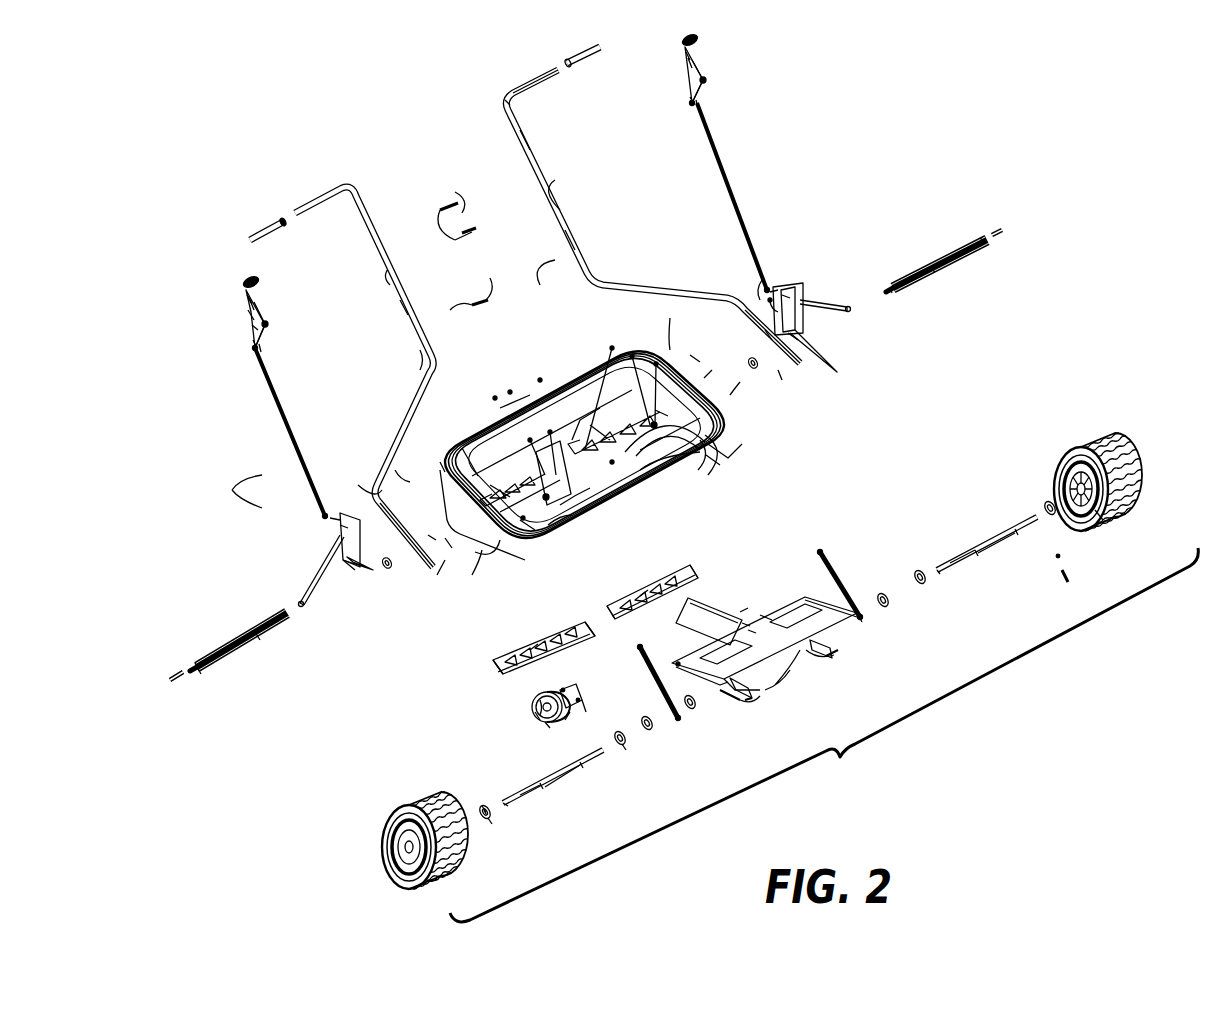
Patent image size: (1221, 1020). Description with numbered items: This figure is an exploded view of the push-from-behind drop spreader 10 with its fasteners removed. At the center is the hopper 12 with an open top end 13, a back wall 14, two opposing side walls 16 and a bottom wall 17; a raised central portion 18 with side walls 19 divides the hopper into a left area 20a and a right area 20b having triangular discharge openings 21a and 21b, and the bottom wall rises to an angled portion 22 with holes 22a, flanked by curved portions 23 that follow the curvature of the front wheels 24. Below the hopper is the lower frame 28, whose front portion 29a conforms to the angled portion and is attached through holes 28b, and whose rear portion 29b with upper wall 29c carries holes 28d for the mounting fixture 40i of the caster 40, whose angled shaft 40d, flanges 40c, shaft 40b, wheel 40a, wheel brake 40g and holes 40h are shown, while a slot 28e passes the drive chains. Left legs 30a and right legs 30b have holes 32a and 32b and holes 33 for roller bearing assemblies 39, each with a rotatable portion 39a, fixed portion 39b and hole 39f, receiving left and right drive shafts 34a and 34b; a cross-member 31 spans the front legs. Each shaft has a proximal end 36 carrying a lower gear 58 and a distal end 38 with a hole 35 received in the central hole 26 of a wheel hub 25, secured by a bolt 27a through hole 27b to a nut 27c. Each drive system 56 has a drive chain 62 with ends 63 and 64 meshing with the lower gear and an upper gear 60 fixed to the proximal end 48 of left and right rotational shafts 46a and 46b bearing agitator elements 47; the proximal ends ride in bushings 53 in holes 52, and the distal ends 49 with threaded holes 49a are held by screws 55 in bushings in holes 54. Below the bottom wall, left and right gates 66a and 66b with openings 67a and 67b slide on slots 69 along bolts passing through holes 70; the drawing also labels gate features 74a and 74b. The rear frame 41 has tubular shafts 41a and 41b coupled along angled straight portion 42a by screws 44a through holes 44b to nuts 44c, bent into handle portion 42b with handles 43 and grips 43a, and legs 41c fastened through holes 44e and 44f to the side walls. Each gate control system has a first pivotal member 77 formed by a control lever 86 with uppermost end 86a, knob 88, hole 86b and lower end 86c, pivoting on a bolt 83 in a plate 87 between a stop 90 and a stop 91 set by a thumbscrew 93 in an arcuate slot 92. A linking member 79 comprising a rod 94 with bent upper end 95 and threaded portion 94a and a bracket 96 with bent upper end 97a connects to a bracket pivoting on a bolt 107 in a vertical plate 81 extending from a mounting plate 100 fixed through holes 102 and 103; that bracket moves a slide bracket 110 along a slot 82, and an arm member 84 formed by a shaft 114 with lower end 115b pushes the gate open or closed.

The drop spreader 10 is at (843, 758).
The hopper 12 is at (645, 342).
The open top end 13 is at (586, 420).
The back wall 14 is at (482, 462).
The side walls 16 is at (576, 475).
The bottom wall 17 is at (438, 462).
The raised central portion 18 is at (540, 438).
The side walls of raised central portion 19 is at (575, 506).
The left area 20a is at (552, 528).
The right area 20b is at (655, 480).
The discharge opening 21a is at (512, 480).
The discharge opening 21b is at (578, 445).
The angled portion 22 is at (660, 495).
The holes 22a is at (690, 495).
The curved portions 23 is at (725, 468).
The wheels 24 is at (382, 835).
The hub 25 is at (1062, 468).
The central hole 26 is at (1073, 515).
The bolt 27a is at (1063, 578).
The hole 27b is at (1097, 525).
The retaining nut 27c is at (1062, 558).
The lower frame 28 is at (808, 596).
The holes 28b is at (804, 598).
The holes 28d is at (690, 612).
The slot 28e is at (745, 610).
The front portion 29a is at (770, 615).
The rear portion 29b is at (740, 622).
The upper wall 29c is at (748, 630).
The left legs 30a is at (740, 700).
The right legs 30b is at (820, 650).
The cross-member or spacer 31 is at (785, 690).
The hole 32a is at (745, 698).
The hole 32b is at (825, 660).
The holes 33 is at (692, 710).
The left drive shaft 34a is at (545, 786).
The right drive shaft 34b is at (976, 553).
The hole 35 is at (530, 790).
The proximal end 36 is at (560, 776).
The distal end 38 is at (506, 804).
The roller bearing assembly 39 is at (490, 816).
The rotatable portion 39a is at (488, 820).
The fixed portion 39b is at (482, 806).
The hole 39f is at (482, 808).
The caster 40 is at (548, 722).
The wheel 40a is at (535, 714).
The shaft 40b is at (545, 724).
The flanges 40c is at (568, 722).
The angled shaft 40d is at (538, 705).
The wheel brake 40g is at (585, 706).
The holes 40h is at (560, 690).
The mounting fixture 40i is at (574, 688).
The rear frame 41 is at (578, 236).
The tubular shaft 41a is at (398, 306).
The tubular shaft 41b is at (568, 202).
The legs 41c is at (400, 540).
The angled straight portion 42a is at (528, 131).
The handle portion 42b is at (503, 96).
The handles 43 is at (530, 75).
The handle grips 43a is at (572, 55).
The screws 44a is at (438, 209).
The holes 44b is at (356, 247).
The retaining nuts 44c is at (476, 232).
The holes 44e is at (790, 370).
The holes 44f is at (575, 452).
The left rotational shaft 46a is at (248, 625).
The right rotational shaft 46b is at (957, 252).
The agitator elements 47 is at (222, 645).
The proximal end 48 is at (290, 618).
The distal end 49 is at (198, 672).
The threaded central hole 49a is at (196, 662).
The hole 52 is at (525, 428).
The bushing 53 is at (505, 418).
The hole 54 is at (558, 438).
The screw 55 is at (170, 672).
The drive systems 56 is at (832, 572).
The lower gear 58 is at (884, 592).
The upper gear 60 is at (387, 570).
The drive chain 62 is at (655, 650).
The end of drive chain 63 is at (862, 620).
The end of drive chain 64 is at (822, 552).
The left gate 66a is at (525, 655).
The right gate 66b is at (690, 565).
The opening 67a is at (492, 662).
The opening 67b is at (607, 606).
The slots 69 is at (640, 596).
The holes 70 is at (452, 452).
The deflector tab 74a is at (590, 628).
The deflector tab 74b is at (612, 605).
The first pivotal member 77 is at (686, 50).
The linking member 79 is at (750, 240).
The vertical plate 81 is at (345, 512).
The slot 82 is at (766, 300).
The bolt 83 is at (248, 312).
The arm member 84 is at (325, 572).
The control lever 86 is at (700, 52).
The uppermost end 86a is at (686, 44).
The hole 86b is at (250, 330).
The lower end 86c is at (688, 98).
The plate 87 is at (700, 104).
The knob 88 is at (694, 36).
The stop 90 is at (246, 296).
The stop 91 is at (705, 86).
The arcuate slot 92 is at (706, 66).
The thumbscrew 93 is at (708, 80).
The rod 94 is at (722, 150).
The threaded portion 94a is at (325, 512).
The bent upper end 95 is at (688, 105).
The bracket 96 is at (338, 528).
The bent upper end 97a is at (330, 518).
The mounting plate 100 is at (348, 575).
The holes 102 is at (358, 568).
The holes 103 is at (486, 452).
The bolt 107 is at (762, 280).
The bracket 110 is at (772, 300).
The shaft 114 is at (312, 588).
The lower end 115b is at (305, 608).